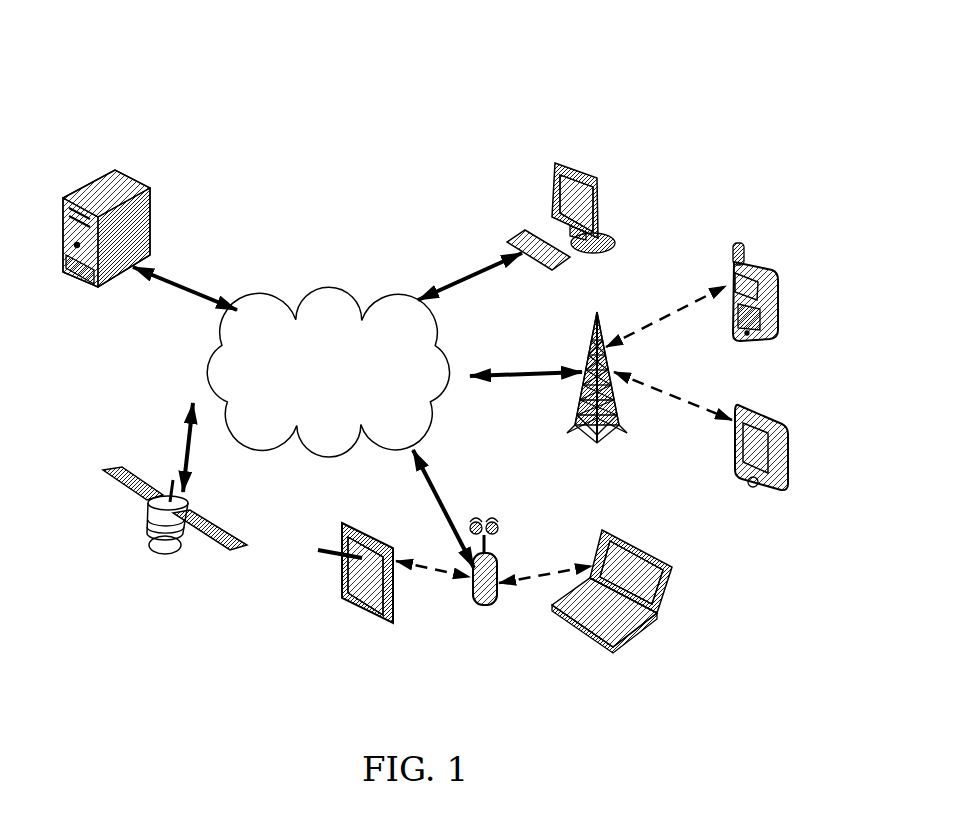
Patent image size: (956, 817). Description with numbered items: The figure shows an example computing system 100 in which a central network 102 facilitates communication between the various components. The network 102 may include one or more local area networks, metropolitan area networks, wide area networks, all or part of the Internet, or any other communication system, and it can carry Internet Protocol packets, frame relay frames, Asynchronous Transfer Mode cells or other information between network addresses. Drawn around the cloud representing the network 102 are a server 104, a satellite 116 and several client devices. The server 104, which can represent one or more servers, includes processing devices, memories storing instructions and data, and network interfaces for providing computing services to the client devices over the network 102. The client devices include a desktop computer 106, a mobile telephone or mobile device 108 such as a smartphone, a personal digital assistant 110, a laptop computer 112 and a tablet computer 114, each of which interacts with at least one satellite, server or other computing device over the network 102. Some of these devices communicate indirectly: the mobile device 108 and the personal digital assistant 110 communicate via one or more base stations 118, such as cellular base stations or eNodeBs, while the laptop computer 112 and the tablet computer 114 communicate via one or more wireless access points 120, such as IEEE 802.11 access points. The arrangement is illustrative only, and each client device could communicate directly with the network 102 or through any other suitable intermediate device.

The computing system 100 is at (714, 95).
The network 102 is at (328, 372).
The server 104 is at (89, 187).
The desktop computer 106 is at (552, 183).
The mobile telephone 108 is at (780, 278).
The personal digital assistant 110 is at (772, 412).
The laptop computer 112 is at (672, 568).
The tablet computer 114 is at (348, 526).
The satellite 116 is at (105, 479).
The base station 118 is at (623, 407).
The wireless access point 120 is at (502, 535).